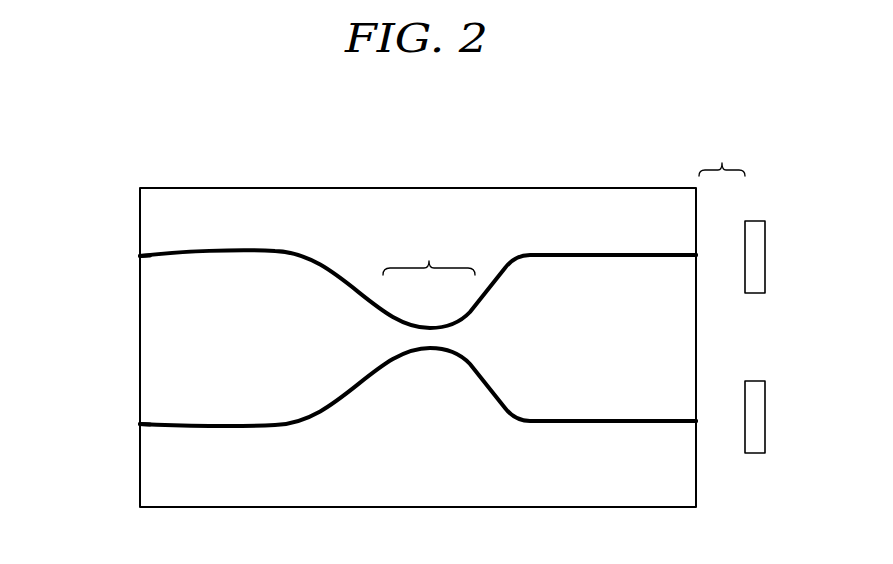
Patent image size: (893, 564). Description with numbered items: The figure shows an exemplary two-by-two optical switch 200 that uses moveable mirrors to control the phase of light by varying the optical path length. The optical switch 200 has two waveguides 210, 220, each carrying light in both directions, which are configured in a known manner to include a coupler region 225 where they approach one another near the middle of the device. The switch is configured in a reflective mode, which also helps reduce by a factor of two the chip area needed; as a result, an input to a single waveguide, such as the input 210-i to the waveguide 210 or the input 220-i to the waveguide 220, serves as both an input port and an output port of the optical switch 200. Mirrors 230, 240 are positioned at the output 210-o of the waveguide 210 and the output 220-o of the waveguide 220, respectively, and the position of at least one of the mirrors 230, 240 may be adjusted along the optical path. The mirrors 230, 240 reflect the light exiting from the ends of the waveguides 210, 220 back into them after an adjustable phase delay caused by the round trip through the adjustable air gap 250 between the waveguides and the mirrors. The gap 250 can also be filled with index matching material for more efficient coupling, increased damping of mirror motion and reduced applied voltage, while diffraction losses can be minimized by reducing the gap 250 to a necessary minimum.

The optical switch 200 is at (542, 115).
The waveguide 210 is at (215, 252).
The input 210-i is at (140, 257).
The output of waveguide 210 210-o is at (649, 231).
The waveguide 220 is at (507, 401).
The input 220-i is at (140, 426).
The output of waveguide 220 220-o is at (649, 448).
The coupler region 225 is at (429, 252).
The adjustable air gap 250 is at (722, 151).
The mirror 230 is at (765, 253).
The mirror 240 is at (765, 413).